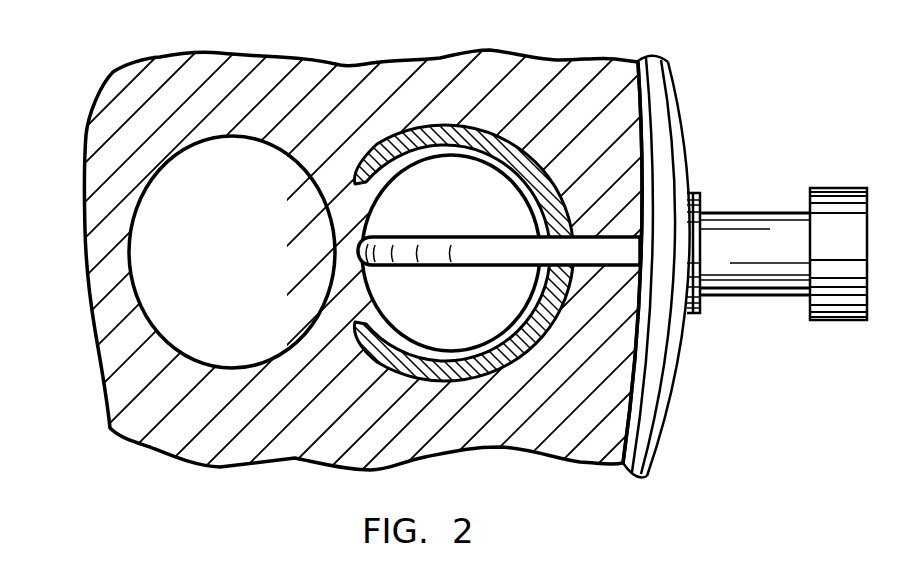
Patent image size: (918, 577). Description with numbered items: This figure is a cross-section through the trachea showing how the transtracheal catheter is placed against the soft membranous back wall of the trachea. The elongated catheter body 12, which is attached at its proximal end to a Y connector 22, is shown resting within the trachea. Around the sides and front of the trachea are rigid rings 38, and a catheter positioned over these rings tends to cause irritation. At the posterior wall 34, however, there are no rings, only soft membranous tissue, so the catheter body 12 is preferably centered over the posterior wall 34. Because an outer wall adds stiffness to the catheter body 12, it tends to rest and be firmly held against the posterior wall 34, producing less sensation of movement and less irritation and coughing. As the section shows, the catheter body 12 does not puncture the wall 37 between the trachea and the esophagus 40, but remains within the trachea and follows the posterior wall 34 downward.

The elongated catheter body 12 is at (647, 168).
The Y connector 22 is at (760, 240).
The posterior wall 34 is at (366, 238).
The wall 37 is at (345, 252).
The rigid rings 38 is at (514, 148).
The esophagus 40 is at (176, 242).